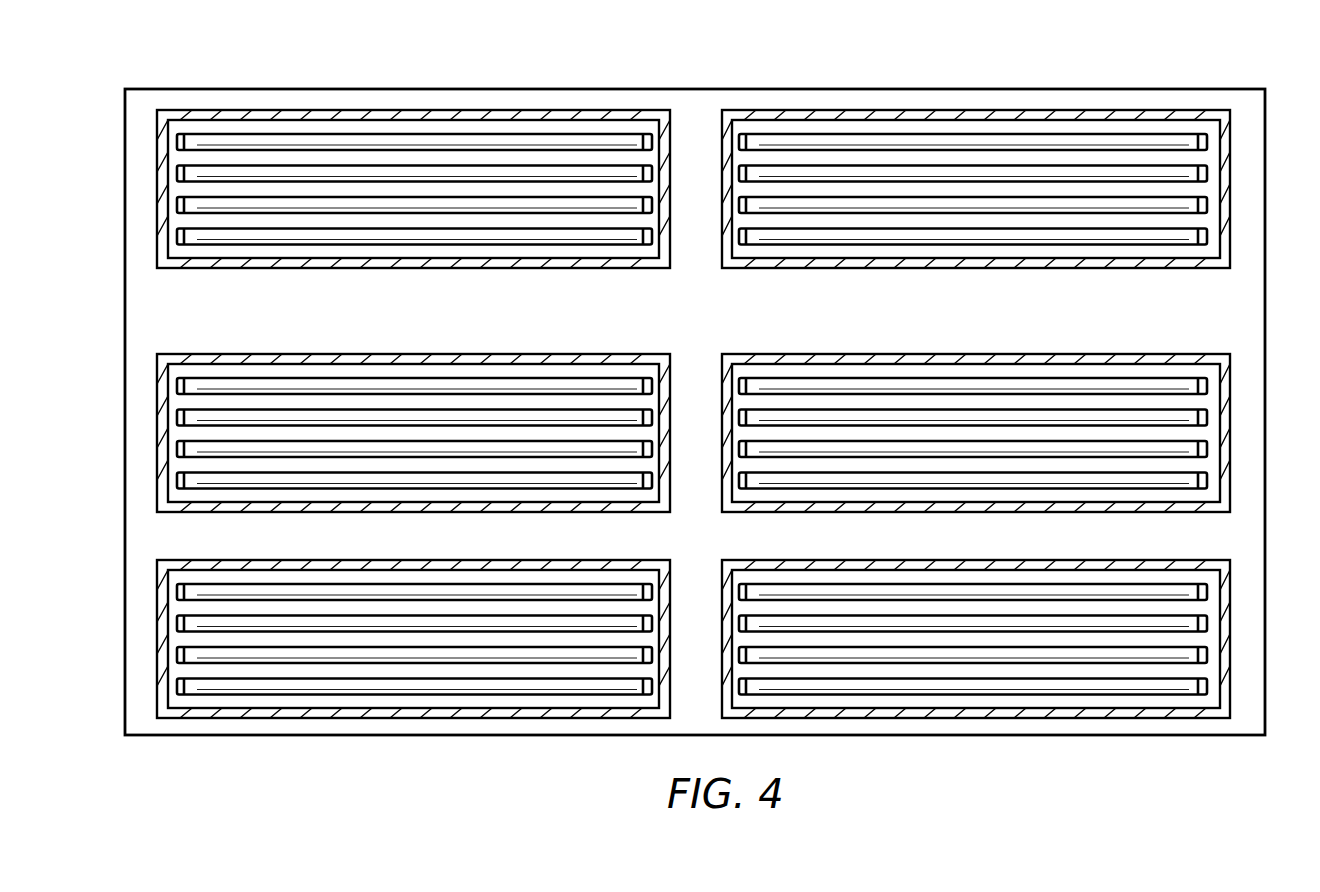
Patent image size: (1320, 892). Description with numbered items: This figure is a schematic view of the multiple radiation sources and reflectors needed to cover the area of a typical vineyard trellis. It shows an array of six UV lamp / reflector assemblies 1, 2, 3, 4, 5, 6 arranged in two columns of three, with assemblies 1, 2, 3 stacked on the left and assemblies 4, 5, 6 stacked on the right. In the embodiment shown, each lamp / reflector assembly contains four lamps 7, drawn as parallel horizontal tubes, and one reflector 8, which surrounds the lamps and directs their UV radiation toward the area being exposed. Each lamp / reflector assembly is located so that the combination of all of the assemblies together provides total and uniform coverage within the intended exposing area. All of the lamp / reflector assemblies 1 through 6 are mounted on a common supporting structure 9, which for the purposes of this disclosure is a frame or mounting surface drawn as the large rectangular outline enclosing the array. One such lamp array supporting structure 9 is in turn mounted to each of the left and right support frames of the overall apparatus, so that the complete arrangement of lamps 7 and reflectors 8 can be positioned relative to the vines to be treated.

The UV lamp / reflector assembly 1 is at (157, 176).
The UV lamp / reflector assembly 2 is at (157, 410).
The UV lamp / reflector assembly 3 is at (157, 612).
The UV lamp / reflector assembly 4 is at (1230, 151).
The UV lamp / reflector assembly 5 is at (1230, 411).
The UV lamp / reflector assembly 6 is at (1230, 615).
The lamp 7 is at (558, 165).
The reflector 8 is at (670, 255).
The supporting structure 9 is at (956, 90).